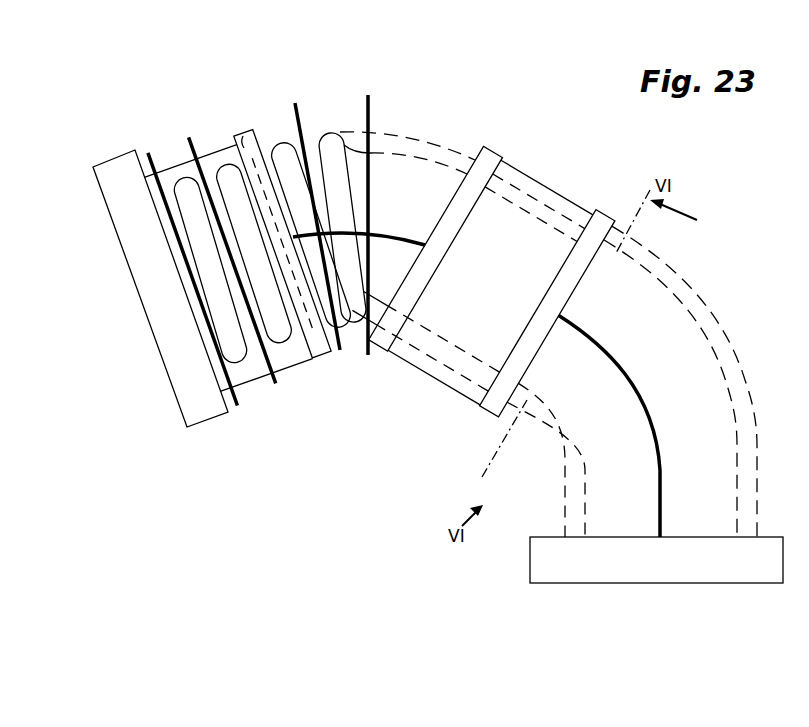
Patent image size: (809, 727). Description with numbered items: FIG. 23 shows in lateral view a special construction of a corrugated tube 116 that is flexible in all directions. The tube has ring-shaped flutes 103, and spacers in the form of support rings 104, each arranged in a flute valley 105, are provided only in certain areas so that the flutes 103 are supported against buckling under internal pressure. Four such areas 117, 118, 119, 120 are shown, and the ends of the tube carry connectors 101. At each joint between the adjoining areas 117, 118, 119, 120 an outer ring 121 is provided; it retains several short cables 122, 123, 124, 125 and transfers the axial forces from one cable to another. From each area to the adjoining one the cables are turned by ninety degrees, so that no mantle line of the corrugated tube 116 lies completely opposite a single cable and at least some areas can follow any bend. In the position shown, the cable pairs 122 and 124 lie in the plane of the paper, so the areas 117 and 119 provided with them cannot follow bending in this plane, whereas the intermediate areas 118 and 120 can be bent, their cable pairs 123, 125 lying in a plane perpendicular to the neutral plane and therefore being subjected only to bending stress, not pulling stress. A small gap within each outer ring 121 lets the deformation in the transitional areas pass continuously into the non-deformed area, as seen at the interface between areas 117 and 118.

The connector 101 is at (178, 340).
The ring-shaped flute 103 is at (332, 130).
The support ring 104 is at (305, 130).
The flute valley 105 is at (313, 148).
The corrugated tube 116 is at (320, 478).
The area 117 is at (330, 386).
The area 118 is at (372, 361).
The area 119 is at (469, 408).
The area 120 is at (497, 420).
The outer ring 121 is at (238, 135).
The cable 122 is at (176, 167).
The cable 123 is at (398, 231).
The cable 124 is at (551, 190).
The cable 125 is at (640, 380).